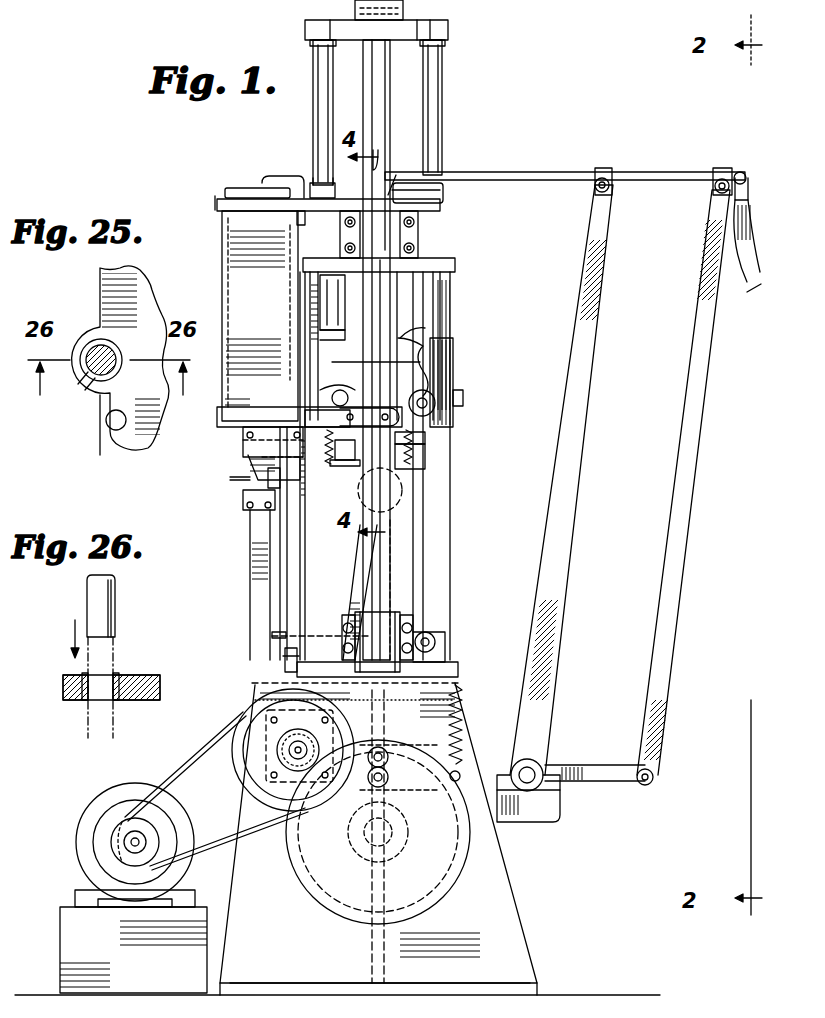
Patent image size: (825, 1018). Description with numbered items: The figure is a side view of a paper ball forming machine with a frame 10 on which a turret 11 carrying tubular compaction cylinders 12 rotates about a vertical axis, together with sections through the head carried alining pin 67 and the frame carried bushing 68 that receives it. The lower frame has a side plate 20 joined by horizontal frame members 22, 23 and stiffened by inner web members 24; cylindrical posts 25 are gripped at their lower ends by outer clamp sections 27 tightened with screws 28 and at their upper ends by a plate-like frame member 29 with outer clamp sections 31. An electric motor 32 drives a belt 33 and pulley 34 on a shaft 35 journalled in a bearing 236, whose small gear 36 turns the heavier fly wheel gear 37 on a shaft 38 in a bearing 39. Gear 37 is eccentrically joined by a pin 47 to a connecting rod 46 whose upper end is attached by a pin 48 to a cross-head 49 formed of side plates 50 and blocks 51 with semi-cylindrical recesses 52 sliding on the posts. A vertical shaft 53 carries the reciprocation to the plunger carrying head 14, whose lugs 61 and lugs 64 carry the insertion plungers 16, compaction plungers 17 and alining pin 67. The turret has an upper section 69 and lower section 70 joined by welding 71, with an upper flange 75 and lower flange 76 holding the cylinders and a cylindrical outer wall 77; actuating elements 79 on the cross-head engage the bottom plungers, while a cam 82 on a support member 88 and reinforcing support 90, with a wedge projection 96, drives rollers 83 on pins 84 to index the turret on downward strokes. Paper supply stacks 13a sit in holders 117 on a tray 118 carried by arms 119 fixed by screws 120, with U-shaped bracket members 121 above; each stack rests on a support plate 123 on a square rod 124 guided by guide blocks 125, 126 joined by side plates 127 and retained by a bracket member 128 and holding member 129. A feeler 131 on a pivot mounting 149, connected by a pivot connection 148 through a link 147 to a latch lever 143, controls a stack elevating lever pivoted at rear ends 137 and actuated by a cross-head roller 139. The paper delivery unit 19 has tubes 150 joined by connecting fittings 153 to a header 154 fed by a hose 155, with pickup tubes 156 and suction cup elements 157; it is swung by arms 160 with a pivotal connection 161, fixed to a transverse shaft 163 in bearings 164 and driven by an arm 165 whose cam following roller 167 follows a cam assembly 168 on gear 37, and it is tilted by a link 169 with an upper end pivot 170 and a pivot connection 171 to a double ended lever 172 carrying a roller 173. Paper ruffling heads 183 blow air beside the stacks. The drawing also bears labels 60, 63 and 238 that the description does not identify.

In FIG. 1, the frame 10 is at (461, 650).
In FIG. 1, the turret 11 is at (460, 352).
In FIG. 1, the compaction cylinders 12 is at (315, 280).
In FIG. 1, the supply stacks 13a is at (244, 242).
In FIG. 1, the plunger carrying head 14 is at (448, 36).
In FIG. 1, the insertion plunger 16 is at (379, 88).
In FIG. 1, the compaction plunger 17 is at (332, 115).
In FIG. 1, the paper delivery unit 19 is at (485, 171).
In FIG. 1, the side plate 20 is at (510, 923).
In FIG. 1, the horizontal frame member 22 is at (459, 667).
In FIG. 1, the horizontal frame member 23 is at (526, 987).
In FIG. 1, the inner web members 24 is at (372, 958).
In FIG. 1, the cylindrical posts 25 is at (390, 552).
In FIG. 1, the outer clamp sections 27 is at (388, 615).
In FIG. 1, the screws 28 is at (340, 640).
In FIG. 1, the horizontal plate-like frame member 29 is at (440, 210).
In FIG. 25, the horizontal plate-like frame member 29 is at (100, 443).
In FIG. 26, the horizontal plate-like frame member 29 is at (148, 673).
In FIG. 1, the outer clamp sections 31 is at (416, 239).
In FIG. 1, the electric motor 32 is at (98, 808).
In FIG. 1, the belt 33 is at (203, 759).
In FIG. 1, the pulley 34 is at (248, 720).
In FIG. 1, the shaft 35 is at (290, 751).
In FIG. 1, the gear 36 is at (278, 750).
In FIG. 1, the gear 37 is at (424, 921).
In FIG. 1, the shaft 38 is at (392, 840).
In FIG. 1, the bearing 39 is at (360, 853).
In FIG. 1, the connecting rod 46 is at (361, 560).
In FIG. 1, the pin 47 is at (298, 806).
In FIG. 1, the pin 48 is at (402, 492).
In FIG. 1, the cross-head 49 is at (345, 481).
In FIG. 1, the side plates 50 is at (350, 477).
In FIG. 1, the blocks 51 is at (415, 434).
In FIG. 1, the semi-cylindrical recess 52 is at (408, 450).
In FIG. 1, the vertical shaft 53 is at (385, 117).
In FIG. 1, the cap 60 is at (406, 14).
In FIG. 1, the lugs 61 is at (360, 26).
In FIG. 1, the rod end 63 is at (388, 160).
In FIG. 1, the lugs 64 is at (305, 31).
In FIG. 1, the alining pin 67 is at (313, 120).
In FIG. 25, the alining pin 67 is at (78, 385).
In FIG. 26, the alining pin 67 is at (115, 606).
In FIG. 1, the bushing 68 is at (334, 184).
In FIG. 25, the bushing 68 is at (90, 385).
In FIG. 26, the bushing 68 is at (73, 702).
In FIG. 1, the upper section 69 is at (426, 306).
In FIG. 1, the lower section 70 is at (461, 371).
In FIG. 1, the welding 71 is at (455, 348).
In FIG. 1, the upper flange 75 is at (458, 259).
In FIG. 1, the lower flange 76 is at (428, 348).
In FIG. 1, the cylindrical outer wall 77 is at (455, 352).
In FIG. 1, the actuating elements 79 is at (328, 466).
In FIG. 1, the cam 82 is at (446, 384).
In FIG. 1, the rollers 83 is at (340, 398).
In FIG. 1, the pin 84 is at (320, 390).
In FIG. 1, the support member 88 is at (330, 358).
In FIG. 1, the reinforcing support 90 is at (420, 354).
In FIG. 1, the wedge projection 96 is at (408, 346).
In FIG. 1, the paper holders 117 is at (226, 268).
In FIG. 1, the tray 118 is at (220, 428).
In FIG. 1, the arms 119 is at (305, 410).
In FIG. 1, the screws 120 is at (385, 408).
In FIG. 1, the U-shaped bracket members 121 is at (218, 204).
In FIG. 1, the support plate 123 is at (230, 370).
In FIG. 1, the rod 124 is at (250, 577).
In FIG. 1, the guide block 125 is at (243, 447).
In FIG. 1, the guide block 126 is at (245, 508).
In FIG. 1, the side plates 127 is at (240, 490).
In FIG. 1, the bracket member 128 is at (238, 457).
In FIG. 1, the holding member 129 is at (245, 472).
In FIG. 1, the feeler 131 is at (272, 186).
In FIG. 1, the rear ends 137 is at (430, 635).
In FIG. 1, the roller 139 is at (432, 515).
In FIG. 1, the latch lever 143 is at (452, 408).
In FIG. 1, the link 147 is at (314, 308).
In FIG. 1, the pivot connection 148 is at (300, 170).
In FIG. 1, the pivot mounting 149 is at (468, 206).
In FIG. 1, the tubes 150 is at (568, 160).
In FIG. 1, the connecting fitting 153 is at (607, 170).
In FIG. 1, the tubular header 154 is at (762, 166).
In FIG. 1, the hose 155 is at (748, 286).
In FIG. 1, the pickup tubes 156 is at (406, 190).
In FIG. 1, the suction cup elements 157 is at (431, 198).
In FIG. 1, the arms 160 is at (576, 445).
In FIG. 1, the pivotal connection 161 is at (610, 183).
In FIG. 1, the transverse shaft 163 is at (533, 796).
In FIG. 1, the bearings 164 is at (538, 775).
In FIG. 1, the arm 165 is at (495, 762).
In FIG. 1, the cam following roller 167 is at (454, 708).
In FIG. 1, the cam assembly 168 is at (338, 921).
In FIG. 1, the link 169 is at (694, 480).
In FIG. 1, the upper end pivot 170 is at (712, 191).
In FIG. 1, the pivot connection 171 is at (653, 776).
In FIG. 1, the double ended lever 172 is at (586, 764).
In FIG. 1, the roller 173 is at (385, 795).
In FIG. 1, the paper ruffling heads 183 is at (297, 215).
In FIG. 1, the bearing 236 is at (268, 792).
In FIG. 1, the rod 238 is at (280, 635).